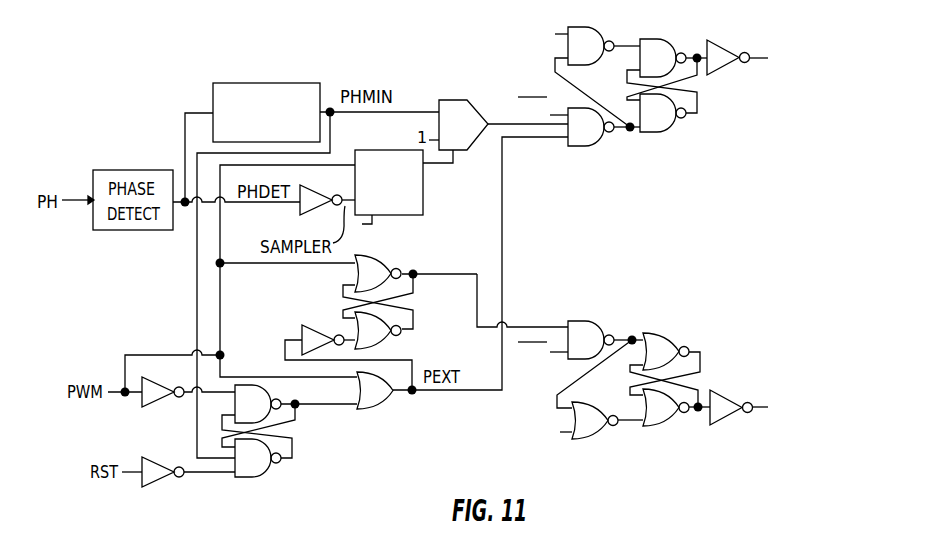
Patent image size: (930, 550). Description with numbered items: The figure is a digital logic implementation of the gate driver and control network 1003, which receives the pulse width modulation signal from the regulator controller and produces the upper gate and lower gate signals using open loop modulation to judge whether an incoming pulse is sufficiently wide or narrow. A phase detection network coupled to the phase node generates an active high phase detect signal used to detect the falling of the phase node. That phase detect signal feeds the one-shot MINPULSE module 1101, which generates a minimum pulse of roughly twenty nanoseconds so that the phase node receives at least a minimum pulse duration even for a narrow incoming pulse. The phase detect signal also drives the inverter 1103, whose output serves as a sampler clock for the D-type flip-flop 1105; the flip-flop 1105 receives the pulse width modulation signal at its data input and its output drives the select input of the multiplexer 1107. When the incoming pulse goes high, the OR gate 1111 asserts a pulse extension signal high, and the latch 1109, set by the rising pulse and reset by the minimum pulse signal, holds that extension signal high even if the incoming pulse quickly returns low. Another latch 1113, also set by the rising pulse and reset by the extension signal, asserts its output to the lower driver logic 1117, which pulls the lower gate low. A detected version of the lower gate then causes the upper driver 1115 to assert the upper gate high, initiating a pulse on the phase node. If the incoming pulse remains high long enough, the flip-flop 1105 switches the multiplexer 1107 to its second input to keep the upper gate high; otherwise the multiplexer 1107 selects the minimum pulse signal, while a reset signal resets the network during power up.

The gate driver and control network 1003 is at (617, 217).
The one-shot MINPULSE module 1101 is at (288, 133).
The inverter 1103 is at (300, 207).
The D-type flip-flop 1105 is at (423, 204).
The multiplexer 1107 is at (457, 100).
The latch 1109 is at (318, 435).
The OR gate 1111 is at (385, 405).
The latch 1113 is at (340, 293).
The upper driver 1115 is at (698, 118).
The lower driver logic 1117 is at (700, 340).